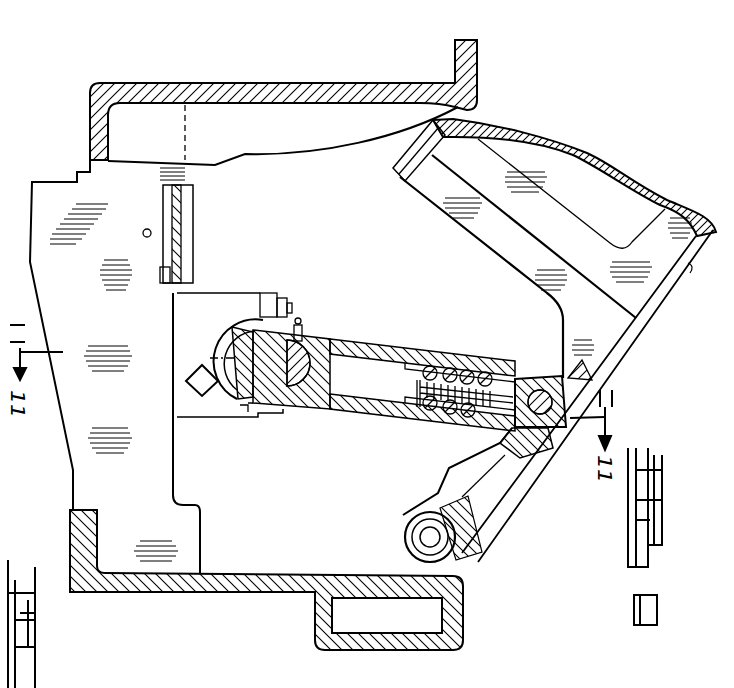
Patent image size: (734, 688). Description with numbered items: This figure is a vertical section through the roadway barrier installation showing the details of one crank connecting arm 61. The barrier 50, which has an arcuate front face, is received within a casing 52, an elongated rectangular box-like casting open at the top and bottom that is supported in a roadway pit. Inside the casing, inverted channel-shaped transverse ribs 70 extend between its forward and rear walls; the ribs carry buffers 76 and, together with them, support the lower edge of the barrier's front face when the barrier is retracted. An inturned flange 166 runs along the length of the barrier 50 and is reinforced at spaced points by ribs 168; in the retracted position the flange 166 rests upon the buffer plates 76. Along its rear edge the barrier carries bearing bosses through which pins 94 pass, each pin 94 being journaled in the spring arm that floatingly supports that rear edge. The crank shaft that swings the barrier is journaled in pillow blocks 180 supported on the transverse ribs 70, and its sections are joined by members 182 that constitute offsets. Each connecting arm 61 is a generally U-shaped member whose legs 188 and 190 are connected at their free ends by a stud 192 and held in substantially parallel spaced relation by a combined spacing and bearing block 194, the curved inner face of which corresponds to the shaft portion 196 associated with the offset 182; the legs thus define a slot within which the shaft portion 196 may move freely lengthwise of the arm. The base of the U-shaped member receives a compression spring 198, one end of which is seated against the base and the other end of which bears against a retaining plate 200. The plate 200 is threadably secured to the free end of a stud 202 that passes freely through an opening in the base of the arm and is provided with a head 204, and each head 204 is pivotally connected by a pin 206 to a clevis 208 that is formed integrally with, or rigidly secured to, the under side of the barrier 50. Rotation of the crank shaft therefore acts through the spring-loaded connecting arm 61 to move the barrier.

The barrier 50 is at (657, 297).
The casing 52 is at (289, 93).
The connecting arm 61 is at (418, 347).
The transverse rib 70 is at (246, 378).
The buffer plate 76 is at (192, 216).
The pin 94 is at (431, 540).
The inturned flange 166 is at (400, 160).
The rib 168 is at (560, 200).
The pillow block 180 is at (258, 416).
The offset member 182 is at (328, 397).
The leg 188 is at (348, 347).
The leg 190 is at (312, 397).
The stud 192 is at (245, 325).
The combined spacing and bearing block 194 is at (217, 350).
The shaft portion 196 is at (300, 400).
The compression spring 198 is at (453, 362).
The retaining plate 200 is at (391, 417).
The stud 202 is at (500, 378).
The head 204 is at (537, 378).
The pin 206 is at (575, 458).
The clevis 208 is at (573, 373).